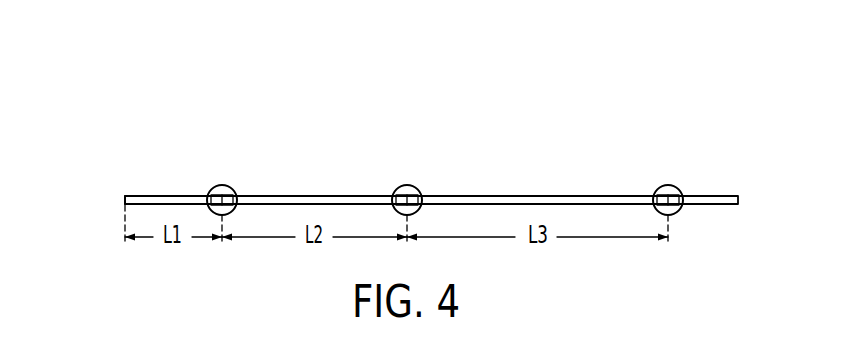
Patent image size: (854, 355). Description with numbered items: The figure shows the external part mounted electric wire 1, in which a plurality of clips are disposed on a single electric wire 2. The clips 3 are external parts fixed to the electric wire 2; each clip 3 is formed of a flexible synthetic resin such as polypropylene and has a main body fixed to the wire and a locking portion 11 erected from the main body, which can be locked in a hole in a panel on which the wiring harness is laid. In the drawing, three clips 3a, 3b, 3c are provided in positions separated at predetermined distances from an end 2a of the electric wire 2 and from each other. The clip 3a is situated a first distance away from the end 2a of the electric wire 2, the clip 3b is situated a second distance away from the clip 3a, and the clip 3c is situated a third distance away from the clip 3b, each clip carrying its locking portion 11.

The external part mounted electric wire 1 is at (403, 153).
The electric wire 2 is at (543, 195).
The end of the electric wire 2a is at (125, 197).
The wiring clip 3 is at (211, 166).
The clip 3a is at (220, 185).
The clip 3b is at (407, 186).
The clip 3c is at (668, 186).
The locking portion 11 is at (237, 191).